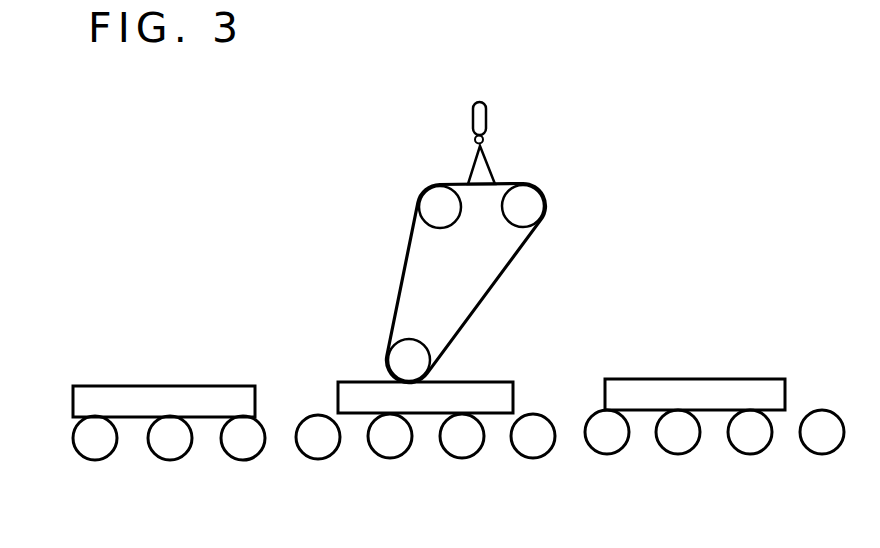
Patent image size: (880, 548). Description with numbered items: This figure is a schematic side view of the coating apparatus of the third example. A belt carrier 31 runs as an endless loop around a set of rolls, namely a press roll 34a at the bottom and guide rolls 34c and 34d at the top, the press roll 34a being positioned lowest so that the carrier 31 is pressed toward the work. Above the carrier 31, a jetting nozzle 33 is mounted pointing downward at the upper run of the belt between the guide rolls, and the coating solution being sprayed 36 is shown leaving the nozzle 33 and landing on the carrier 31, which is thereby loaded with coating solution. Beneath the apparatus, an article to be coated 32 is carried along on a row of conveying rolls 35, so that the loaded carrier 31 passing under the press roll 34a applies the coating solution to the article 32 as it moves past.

The belt carrier 31 is at (398, 286).
The article to be coated 32 is at (175, 385).
The jetting nozzle 33 is at (487, 120).
The press roll 34a is at (405, 358).
The guide roll 34c is at (435, 208).
The pulley 34d is at (530, 207).
The conveying rolls 35 is at (303, 459).
The coating solution being sprayed 36 is at (490, 175).